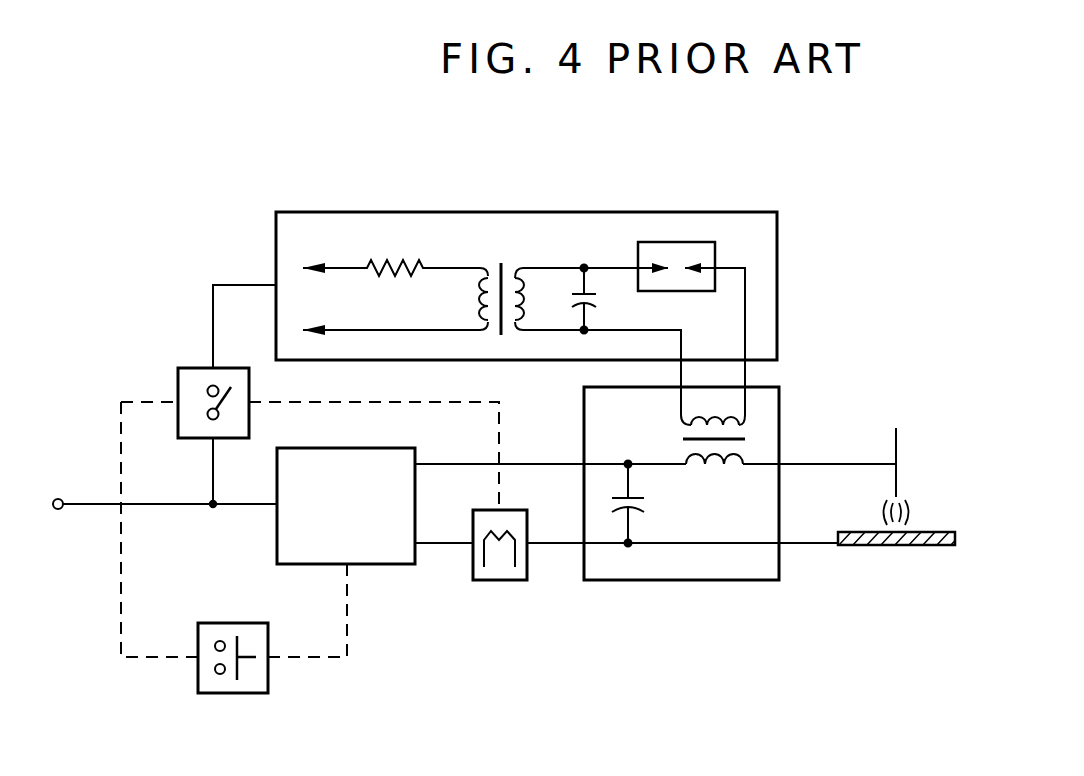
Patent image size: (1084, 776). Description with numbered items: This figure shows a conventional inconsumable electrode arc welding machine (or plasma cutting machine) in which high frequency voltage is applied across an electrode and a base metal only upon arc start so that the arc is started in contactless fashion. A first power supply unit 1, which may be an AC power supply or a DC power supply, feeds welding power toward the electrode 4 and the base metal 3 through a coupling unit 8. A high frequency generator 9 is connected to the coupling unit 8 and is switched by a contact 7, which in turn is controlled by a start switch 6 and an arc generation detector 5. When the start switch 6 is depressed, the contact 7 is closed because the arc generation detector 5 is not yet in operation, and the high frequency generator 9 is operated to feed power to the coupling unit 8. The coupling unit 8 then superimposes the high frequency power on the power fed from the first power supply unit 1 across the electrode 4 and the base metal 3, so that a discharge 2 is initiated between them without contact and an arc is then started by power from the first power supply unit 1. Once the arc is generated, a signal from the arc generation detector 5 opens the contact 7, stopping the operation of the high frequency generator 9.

The first power supply unit 1 is at (377, 564).
The discharge / plasma 2 is at (915, 508).
The base metal 3 is at (935, 545).
The electrode 4 is at (896, 437).
The arc generation detector 5 is at (500, 580).
The start switch 6 is at (198, 675).
The contact 7 is at (183, 368).
The coupling unit 8 is at (747, 580).
The high frequency generator 9 is at (455, 212).